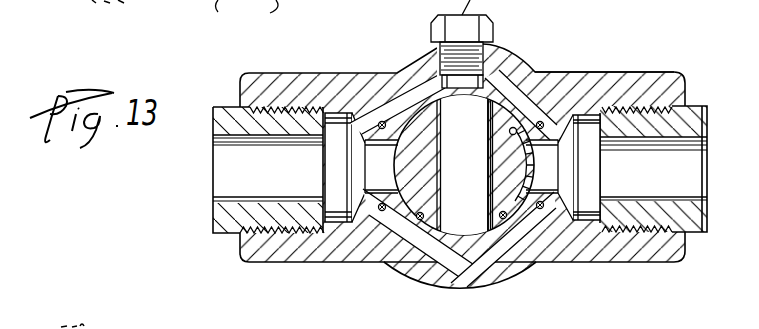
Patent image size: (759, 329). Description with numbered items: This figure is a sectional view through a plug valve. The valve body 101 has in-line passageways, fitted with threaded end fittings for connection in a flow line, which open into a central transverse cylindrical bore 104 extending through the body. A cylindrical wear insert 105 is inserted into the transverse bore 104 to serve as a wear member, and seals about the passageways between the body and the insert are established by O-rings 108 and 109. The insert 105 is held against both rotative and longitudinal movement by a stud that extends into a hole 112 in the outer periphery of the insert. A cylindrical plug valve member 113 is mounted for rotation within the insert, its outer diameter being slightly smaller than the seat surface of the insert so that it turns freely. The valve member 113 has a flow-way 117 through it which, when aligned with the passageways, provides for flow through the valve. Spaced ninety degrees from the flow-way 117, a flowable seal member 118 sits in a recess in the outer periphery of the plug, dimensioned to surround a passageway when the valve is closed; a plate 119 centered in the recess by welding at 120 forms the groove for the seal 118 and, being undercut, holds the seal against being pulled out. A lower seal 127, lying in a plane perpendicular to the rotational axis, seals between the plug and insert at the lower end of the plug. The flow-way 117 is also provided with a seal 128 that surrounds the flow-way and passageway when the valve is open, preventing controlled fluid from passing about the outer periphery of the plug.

The valve body 101 is at (528, 75).
The central transverse cylindrical bore 104 is at (556, 80).
The cylindrical wear insert 105 is at (500, 78).
The O-ring 108 is at (382, 203).
The O-ring 109 is at (578, 80).
The hole 112 is at (427, 77).
The cylindrical plug valve member 113 is at (464, 165).
The flow-way 117 is at (436, 175).
The flowable seal member 118 is at (512, 130).
The plate 119 is at (515, 163).
The welding 120 is at (520, 175).
The lower seal 127 is at (247, 11).
The seal 128 is at (470, 288).